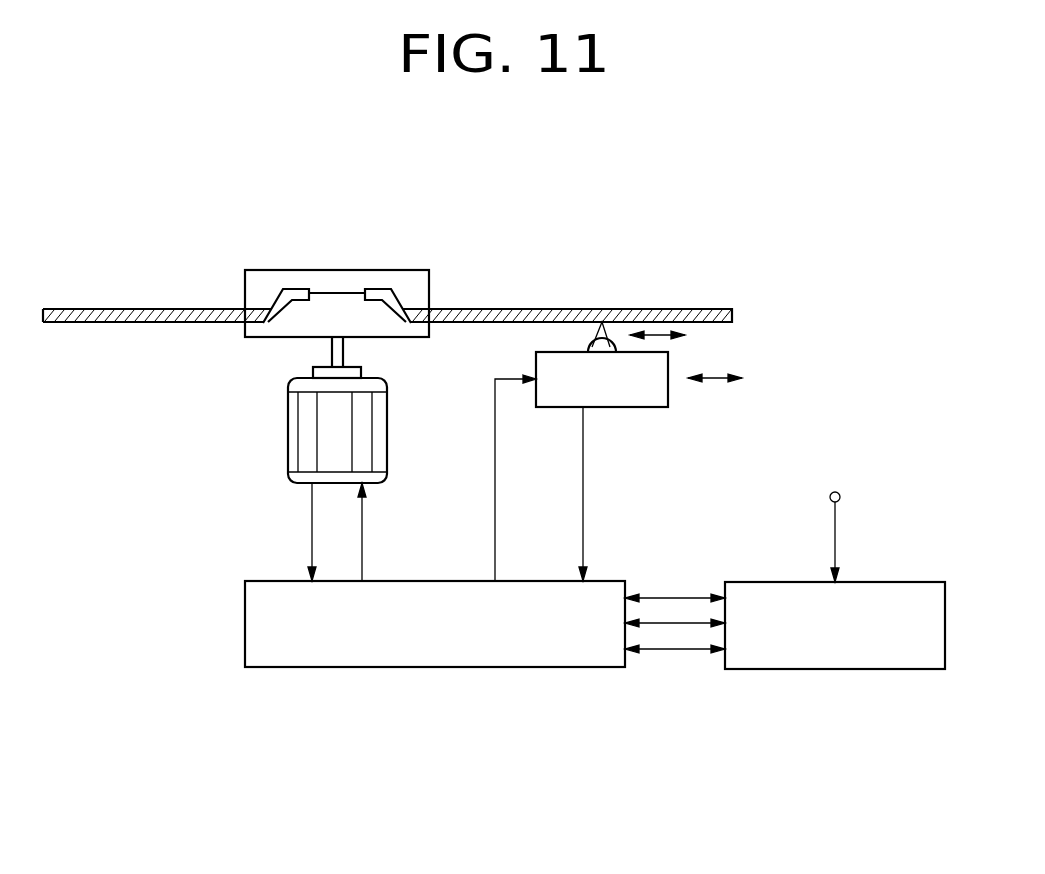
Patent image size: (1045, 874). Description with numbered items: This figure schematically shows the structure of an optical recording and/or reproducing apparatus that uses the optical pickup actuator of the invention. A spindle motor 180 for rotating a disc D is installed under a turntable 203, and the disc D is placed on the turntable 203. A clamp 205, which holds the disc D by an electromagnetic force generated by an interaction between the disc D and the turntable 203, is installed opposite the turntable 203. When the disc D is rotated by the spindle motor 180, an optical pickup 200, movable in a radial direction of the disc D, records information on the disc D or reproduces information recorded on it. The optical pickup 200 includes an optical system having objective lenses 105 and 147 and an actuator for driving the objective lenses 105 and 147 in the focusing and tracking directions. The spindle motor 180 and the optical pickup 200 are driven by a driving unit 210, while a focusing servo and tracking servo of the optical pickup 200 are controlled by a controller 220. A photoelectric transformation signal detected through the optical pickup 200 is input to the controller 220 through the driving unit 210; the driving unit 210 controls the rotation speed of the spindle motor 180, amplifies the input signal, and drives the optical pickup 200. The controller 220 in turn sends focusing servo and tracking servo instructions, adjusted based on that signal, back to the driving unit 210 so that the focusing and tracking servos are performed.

The disc D is at (683, 308).
The clamp 205 is at (273, 278).
The turntable 203 is at (263, 326).
The spindle motor 180 is at (288, 431).
The objective lens 105 is at (540, 303).
The objective lens 147 is at (597, 341).
The optical pickup 200 is at (633, 400).
The driving unit 210 is at (432, 668).
The controller 220 is at (842, 670).